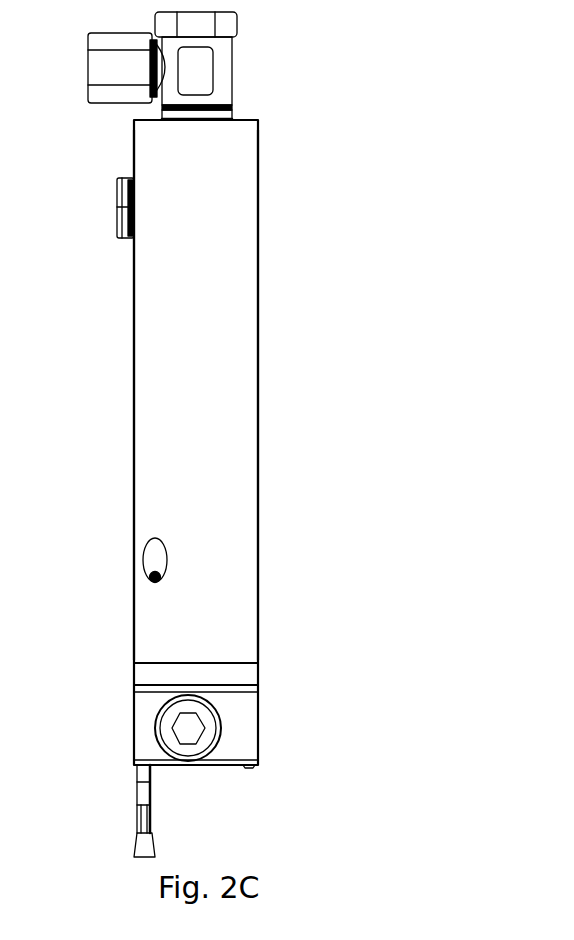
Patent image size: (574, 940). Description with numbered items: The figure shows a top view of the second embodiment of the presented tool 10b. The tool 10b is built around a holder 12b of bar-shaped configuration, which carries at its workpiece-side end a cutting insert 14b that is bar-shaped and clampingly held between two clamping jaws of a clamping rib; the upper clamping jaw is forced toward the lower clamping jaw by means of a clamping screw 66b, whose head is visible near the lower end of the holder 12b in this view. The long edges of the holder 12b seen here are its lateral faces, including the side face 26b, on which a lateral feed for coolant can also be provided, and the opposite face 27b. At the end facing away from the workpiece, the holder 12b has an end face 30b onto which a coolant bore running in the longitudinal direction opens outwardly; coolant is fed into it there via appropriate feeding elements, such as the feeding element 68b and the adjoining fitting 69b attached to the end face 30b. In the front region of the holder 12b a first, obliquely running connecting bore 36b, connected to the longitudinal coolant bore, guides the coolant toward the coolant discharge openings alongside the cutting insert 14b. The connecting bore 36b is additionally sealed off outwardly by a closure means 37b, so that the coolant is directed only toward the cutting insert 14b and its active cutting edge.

The tool 10b is at (410, 146).
The holder 12b is at (263, 163).
The cutting insert 14b is at (137, 812).
The side face 26b is at (259, 412).
The left side wall 27b is at (134, 387).
The end face 30b is at (245, 117).
The connecting bore 36b is at (147, 545).
The closure means 37b is at (150, 577).
The clamping screw 66b is at (166, 722).
The feeding element 68b is at (92, 104).
The valve 69b is at (232, 62).